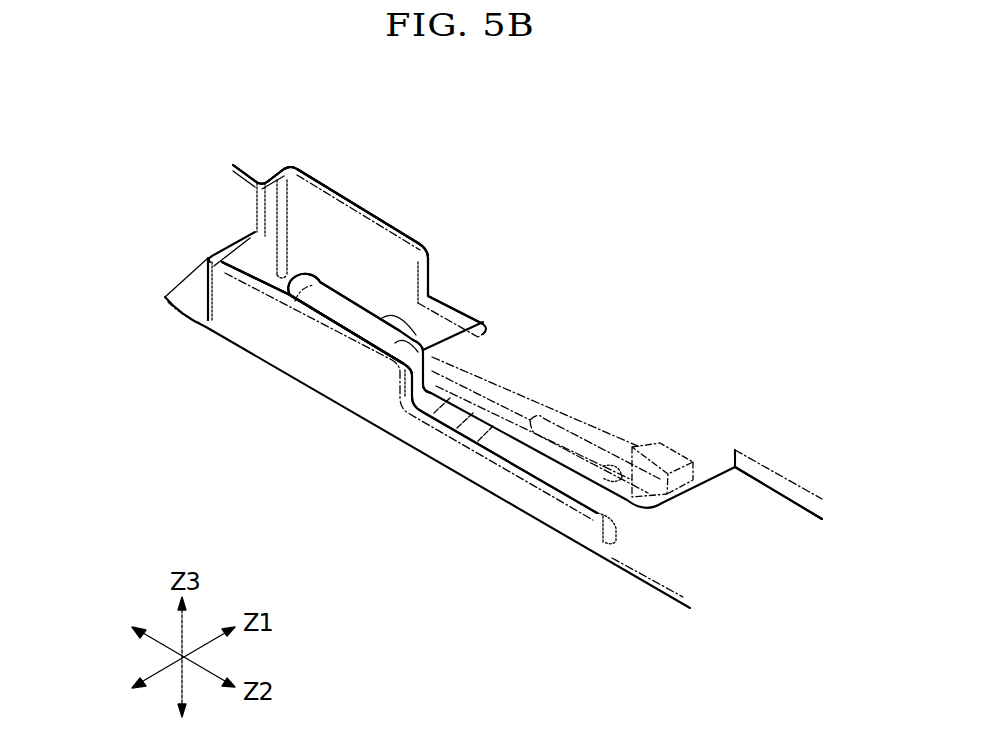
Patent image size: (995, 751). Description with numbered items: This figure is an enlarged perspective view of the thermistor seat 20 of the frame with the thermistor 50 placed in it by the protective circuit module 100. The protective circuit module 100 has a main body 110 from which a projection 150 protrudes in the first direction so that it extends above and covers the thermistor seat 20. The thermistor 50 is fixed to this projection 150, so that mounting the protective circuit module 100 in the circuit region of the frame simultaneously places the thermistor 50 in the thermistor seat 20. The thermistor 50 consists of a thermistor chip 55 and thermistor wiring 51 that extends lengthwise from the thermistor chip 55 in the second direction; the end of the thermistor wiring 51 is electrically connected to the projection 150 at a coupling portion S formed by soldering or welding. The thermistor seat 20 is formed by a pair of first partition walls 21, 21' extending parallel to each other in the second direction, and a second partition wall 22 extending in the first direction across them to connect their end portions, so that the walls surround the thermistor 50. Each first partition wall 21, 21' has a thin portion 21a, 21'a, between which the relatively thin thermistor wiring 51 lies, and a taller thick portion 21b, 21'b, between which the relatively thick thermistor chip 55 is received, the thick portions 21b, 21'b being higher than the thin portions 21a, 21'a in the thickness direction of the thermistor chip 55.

The thermistor seat 20 is at (188, 252).
The first partition wall 21 is at (409, 401).
The thin portion 21a is at (466, 447).
The thick portion 21b is at (387, 323).
The first partition wall 21' is at (386, 244).
The thin portion 21'a is at (539, 359).
The thick portion 21'b is at (343, 234).
The second partition wall 22 is at (236, 243).
The thermistor 50 is at (160, 335).
The thermistor wiring 51 is at (398, 323).
The thermistor chip 55 is at (343, 315).
The protective circuit module 100 is at (630, 682).
The main body 110 is at (767, 477).
The projection 150 is at (603, 477).
The coupling portion S is at (675, 455).